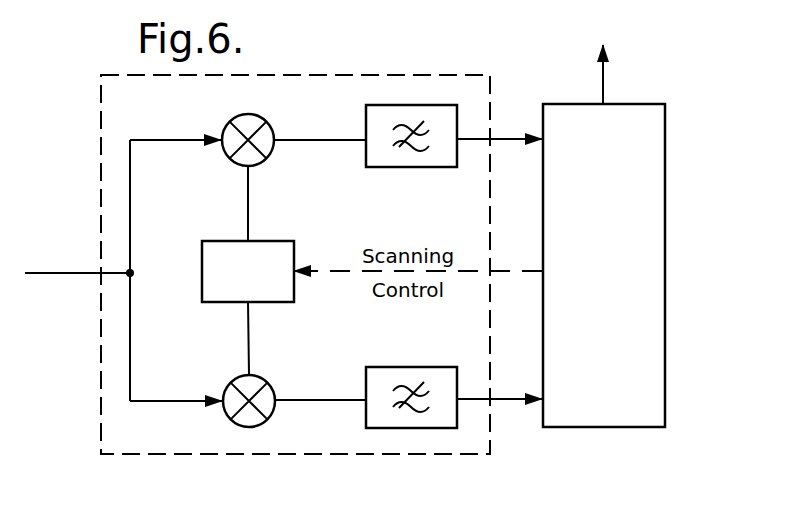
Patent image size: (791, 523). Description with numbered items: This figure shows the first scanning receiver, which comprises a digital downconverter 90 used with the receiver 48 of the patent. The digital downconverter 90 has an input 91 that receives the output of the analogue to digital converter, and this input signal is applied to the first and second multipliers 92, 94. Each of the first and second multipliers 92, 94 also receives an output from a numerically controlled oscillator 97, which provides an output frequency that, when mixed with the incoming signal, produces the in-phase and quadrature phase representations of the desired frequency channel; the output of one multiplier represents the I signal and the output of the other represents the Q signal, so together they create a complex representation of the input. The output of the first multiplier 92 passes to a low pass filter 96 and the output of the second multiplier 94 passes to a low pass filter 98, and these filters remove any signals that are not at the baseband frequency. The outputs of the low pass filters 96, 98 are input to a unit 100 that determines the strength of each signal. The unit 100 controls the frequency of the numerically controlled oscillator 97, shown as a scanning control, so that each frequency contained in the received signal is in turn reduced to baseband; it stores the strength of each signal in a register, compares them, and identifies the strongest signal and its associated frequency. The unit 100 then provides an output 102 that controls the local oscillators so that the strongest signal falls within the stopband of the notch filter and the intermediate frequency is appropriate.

The receiver 48 is at (668, 180).
The digital downconverter 90 is at (402, 455).
The input 91 is at (70, 272).
The first multiplier 92 is at (235, 117).
The second multiplier 94 is at (236, 379).
The low pass filter 96 is at (415, 167).
The numerically controlled oscillator 97 is at (235, 241).
The low pass filter 98 is at (413, 367).
The unit 100 is at (618, 428).
The output 102 is at (603, 82).